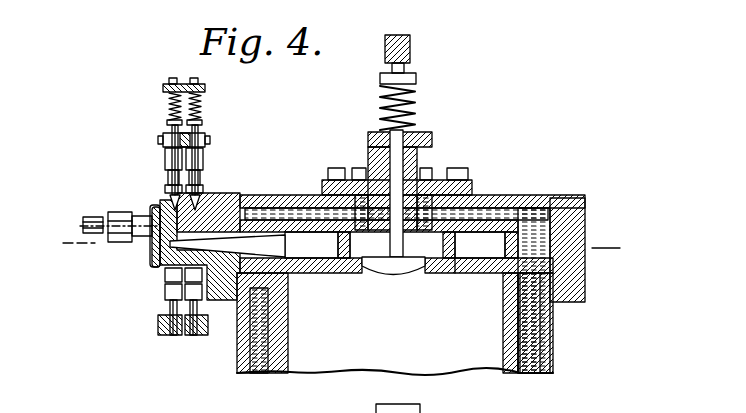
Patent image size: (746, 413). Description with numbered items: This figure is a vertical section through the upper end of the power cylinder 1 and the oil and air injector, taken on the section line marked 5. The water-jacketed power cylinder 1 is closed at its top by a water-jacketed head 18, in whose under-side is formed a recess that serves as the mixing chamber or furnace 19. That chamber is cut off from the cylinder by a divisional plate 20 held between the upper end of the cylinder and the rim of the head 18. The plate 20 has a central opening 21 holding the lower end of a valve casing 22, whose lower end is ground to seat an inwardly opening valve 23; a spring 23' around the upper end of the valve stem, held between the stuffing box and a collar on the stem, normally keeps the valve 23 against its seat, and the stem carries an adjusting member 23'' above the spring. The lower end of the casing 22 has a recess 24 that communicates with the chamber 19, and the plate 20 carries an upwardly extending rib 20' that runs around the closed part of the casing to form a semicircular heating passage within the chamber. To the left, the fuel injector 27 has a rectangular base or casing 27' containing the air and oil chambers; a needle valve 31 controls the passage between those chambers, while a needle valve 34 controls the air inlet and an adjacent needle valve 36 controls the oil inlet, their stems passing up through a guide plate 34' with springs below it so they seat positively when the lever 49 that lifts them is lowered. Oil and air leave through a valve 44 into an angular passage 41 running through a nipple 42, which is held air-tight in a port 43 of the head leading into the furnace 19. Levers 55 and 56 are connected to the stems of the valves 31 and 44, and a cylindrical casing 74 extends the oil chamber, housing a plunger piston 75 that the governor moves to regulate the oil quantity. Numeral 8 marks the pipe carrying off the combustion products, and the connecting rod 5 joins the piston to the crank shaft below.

The power cylinder 1 is at (318, 358).
The connecting rod 5 is at (339, 247).
The pipe 8 is at (177, 218).
The water-jacketed head 18 is at (555, 202).
The mixing chamber or furnace 19 is at (487, 243).
The divisional plate 20 is at (480, 272).
The rib 20' is at (448, 306).
The central opening 21 is at (362, 265).
The valve casing 22 is at (432, 266).
The valve 23 is at (391, 241).
The spring 23' is at (424, 108).
The adjusting screw 23'' is at (426, 59).
The recess 24 is at (336, 262).
The fuel injector 27 is at (120, 211).
The base or casing 27' is at (139, 237).
The needle valve 31 is at (202, 312).
The needle valve 34 is at (208, 151).
The guide plate 34' is at (208, 91).
The needle valve 36 is at (164, 207).
The angular passage 41 is at (158, 267).
The nipple 42 is at (215, 222).
The port 43 is at (262, 247).
The valve 44 is at (168, 307).
The lever 49 is at (172, 137).
The lever 55 is at (195, 337).
The lever 56 is at (167, 332).
The cylindrical casing 74 is at (117, 242).
The plunger piston 75 is at (104, 216).